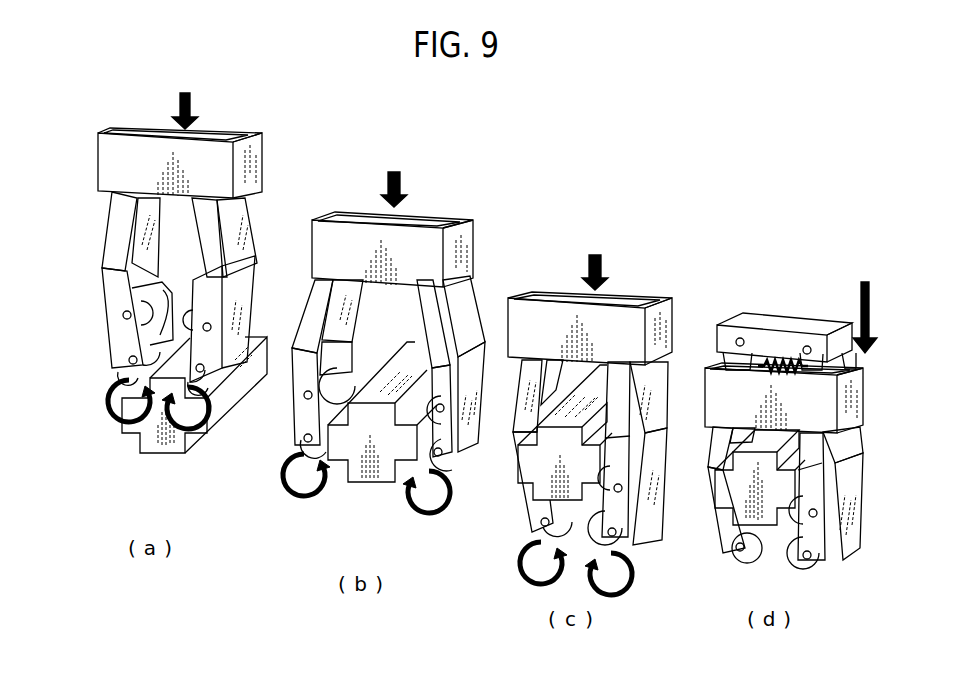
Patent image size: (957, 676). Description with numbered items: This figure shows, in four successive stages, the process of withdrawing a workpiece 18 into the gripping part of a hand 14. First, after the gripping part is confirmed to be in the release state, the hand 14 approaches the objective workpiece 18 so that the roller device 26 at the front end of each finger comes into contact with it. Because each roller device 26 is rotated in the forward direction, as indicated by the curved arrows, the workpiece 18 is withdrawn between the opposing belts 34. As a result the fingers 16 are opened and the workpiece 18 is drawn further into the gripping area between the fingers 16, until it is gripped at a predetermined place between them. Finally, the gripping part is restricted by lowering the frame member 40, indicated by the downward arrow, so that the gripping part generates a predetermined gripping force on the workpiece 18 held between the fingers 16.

The hand 14 is at (95, 256).
The fingers 16 is at (207, 342).
The workpiece 18 is at (160, 448).
The roller device 26 is at (132, 378).
The belts 34 is at (160, 310).
The frame member 40 is at (103, 167).